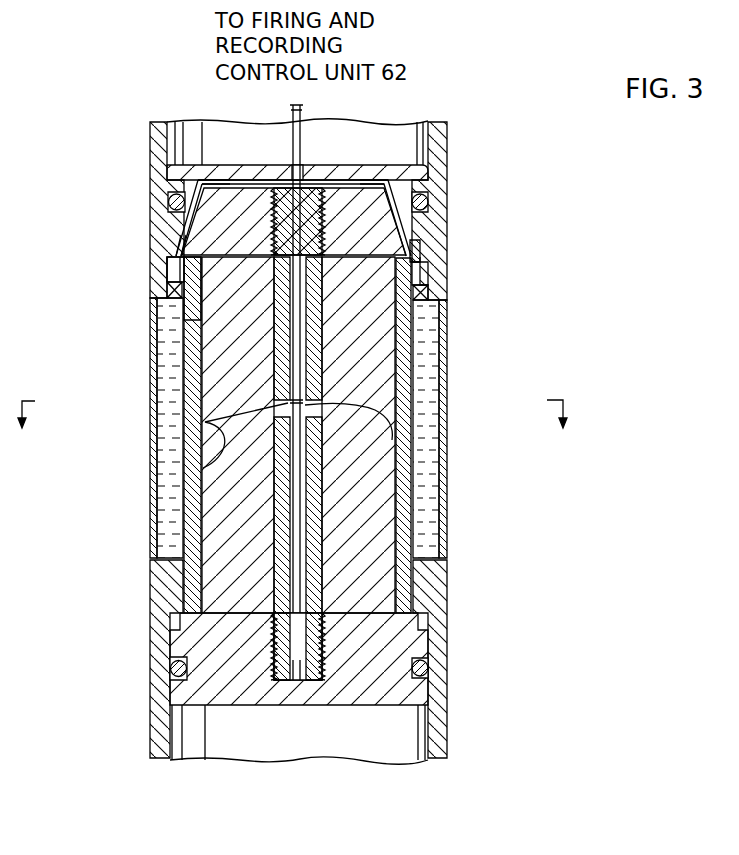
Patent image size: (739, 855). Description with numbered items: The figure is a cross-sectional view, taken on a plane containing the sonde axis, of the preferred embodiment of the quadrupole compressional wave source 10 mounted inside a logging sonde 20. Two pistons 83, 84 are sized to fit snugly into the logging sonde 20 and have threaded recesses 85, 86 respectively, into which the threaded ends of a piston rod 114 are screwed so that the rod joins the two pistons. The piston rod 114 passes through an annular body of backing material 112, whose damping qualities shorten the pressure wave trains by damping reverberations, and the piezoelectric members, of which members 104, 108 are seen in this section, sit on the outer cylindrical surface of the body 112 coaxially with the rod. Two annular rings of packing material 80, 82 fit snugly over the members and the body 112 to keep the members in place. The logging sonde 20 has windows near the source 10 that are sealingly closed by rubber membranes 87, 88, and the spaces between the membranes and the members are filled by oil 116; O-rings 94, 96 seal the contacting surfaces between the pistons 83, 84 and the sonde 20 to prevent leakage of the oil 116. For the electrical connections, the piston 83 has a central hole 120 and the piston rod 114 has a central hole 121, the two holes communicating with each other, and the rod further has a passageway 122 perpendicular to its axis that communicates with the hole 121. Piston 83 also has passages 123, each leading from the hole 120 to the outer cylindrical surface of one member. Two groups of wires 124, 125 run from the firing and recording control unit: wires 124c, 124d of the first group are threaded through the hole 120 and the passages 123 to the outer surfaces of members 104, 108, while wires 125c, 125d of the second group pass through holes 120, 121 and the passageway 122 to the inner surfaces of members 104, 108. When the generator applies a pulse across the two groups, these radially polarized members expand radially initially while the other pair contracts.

The source 10 is at (292, 426).
The logging sonde 20 is at (447, 172).
The annular ring of packing material 80 is at (162, 284).
The annular ring of packing material 82 is at (173, 596).
The piston 83 is at (428, 181).
The piston 84 is at (407, 640).
The threaded recess 85 is at (322, 225).
The threaded recess 86 is at (313, 680).
The rubber membrane 87 is at (404, 453).
The rubber membrane 88 is at (190, 443).
The O-ring 94 is at (428, 206).
The O-ring 96 is at (430, 670).
The piezoelectric member 104 is at (185, 303).
The piezoelectric member 108 is at (425, 292).
The annular body of backing material 112 is at (378, 343).
The piston rod 114 is at (273, 317).
The oil 116 is at (160, 522).
The hole 120 is at (303, 172).
The hole 121 is at (177, 187).
The passageway 122 is at (295, 402).
The passage 123 is at (408, 160).
The group of wires 124 is at (288, 132).
The wire 124c is at (180, 235).
The wire 124d is at (420, 240).
The group of wires 125 is at (300, 140).
The wire 125c is at (203, 468).
The wire 125d is at (381, 407).